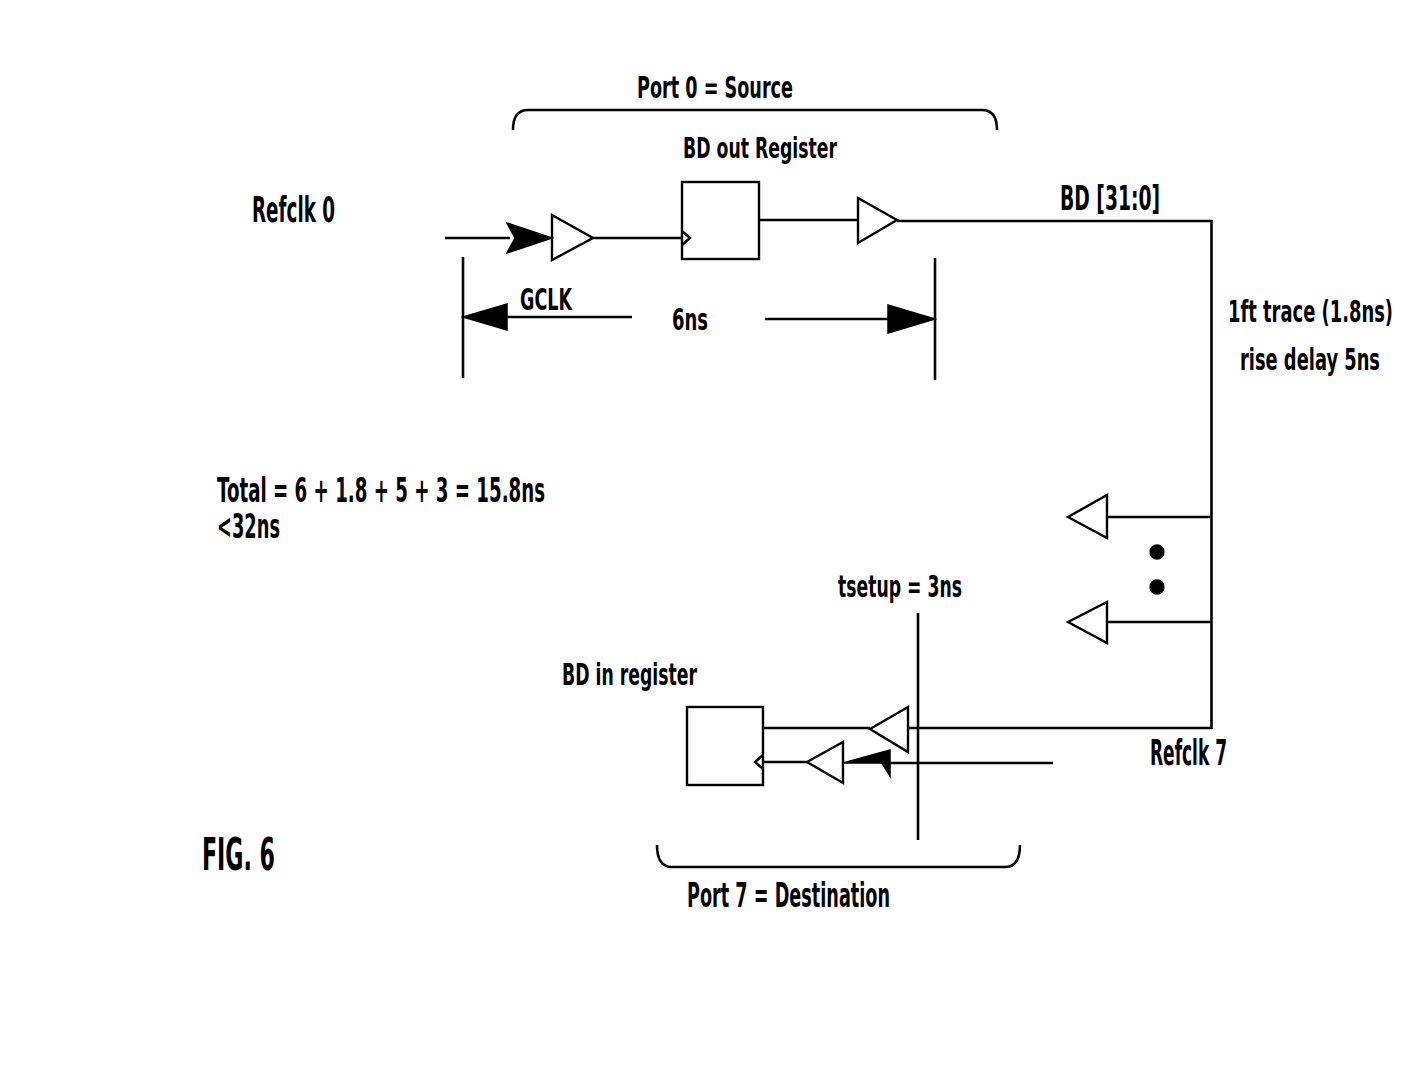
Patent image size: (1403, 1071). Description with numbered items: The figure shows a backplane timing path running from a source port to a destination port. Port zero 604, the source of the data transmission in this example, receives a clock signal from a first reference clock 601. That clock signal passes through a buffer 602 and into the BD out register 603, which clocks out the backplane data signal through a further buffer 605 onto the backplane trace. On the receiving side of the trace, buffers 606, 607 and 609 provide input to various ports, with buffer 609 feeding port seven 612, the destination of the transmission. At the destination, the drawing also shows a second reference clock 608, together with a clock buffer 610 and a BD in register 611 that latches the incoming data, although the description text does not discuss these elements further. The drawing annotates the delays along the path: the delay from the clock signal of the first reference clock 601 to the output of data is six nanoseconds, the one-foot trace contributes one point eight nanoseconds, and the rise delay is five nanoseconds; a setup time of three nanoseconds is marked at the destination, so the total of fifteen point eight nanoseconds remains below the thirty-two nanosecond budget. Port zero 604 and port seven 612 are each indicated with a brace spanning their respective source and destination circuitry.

The Refclk 0 601 is at (424, 232).
The buffer 602 is at (537, 232).
The BD out Register 603 is at (682, 203).
The Port 0 604 is at (566, 109).
The buffer 605 is at (878, 205).
The buffer 606 is at (1107, 501).
The buffer 607 is at (1107, 632).
The Refclk 7 reference clock input 608 is at (1082, 777).
The buffer 609 is at (890, 714).
The clock input buffer 610 is at (826, 778).
The BD in register 611 is at (687, 742).
The port 7 612 is at (675, 868).